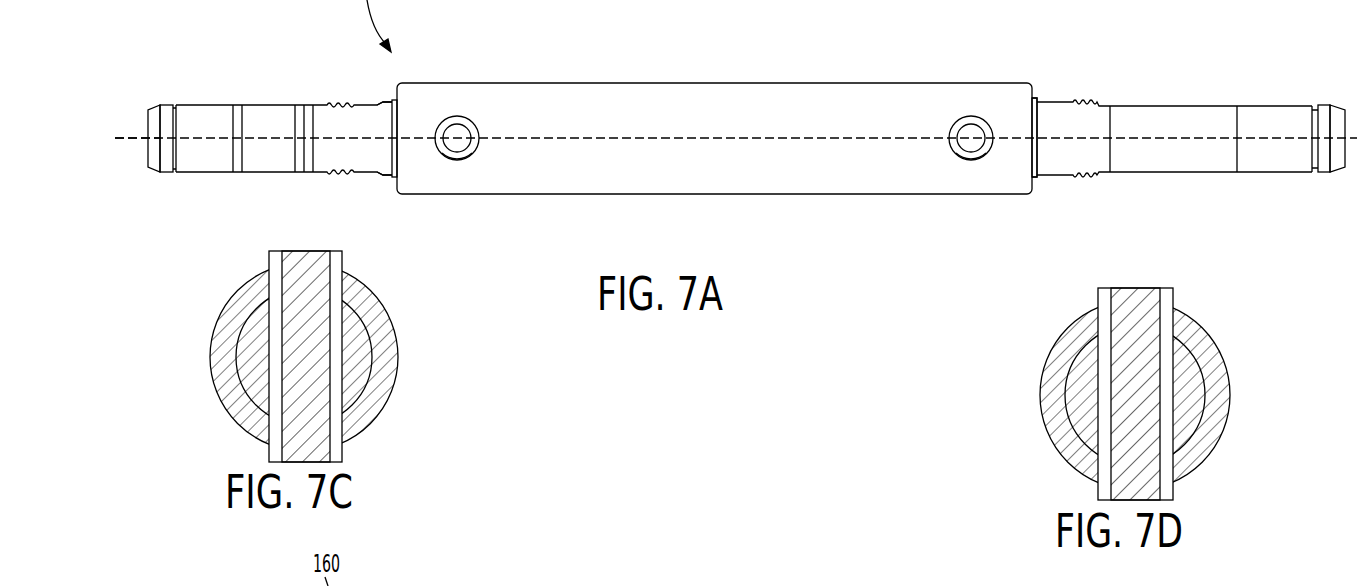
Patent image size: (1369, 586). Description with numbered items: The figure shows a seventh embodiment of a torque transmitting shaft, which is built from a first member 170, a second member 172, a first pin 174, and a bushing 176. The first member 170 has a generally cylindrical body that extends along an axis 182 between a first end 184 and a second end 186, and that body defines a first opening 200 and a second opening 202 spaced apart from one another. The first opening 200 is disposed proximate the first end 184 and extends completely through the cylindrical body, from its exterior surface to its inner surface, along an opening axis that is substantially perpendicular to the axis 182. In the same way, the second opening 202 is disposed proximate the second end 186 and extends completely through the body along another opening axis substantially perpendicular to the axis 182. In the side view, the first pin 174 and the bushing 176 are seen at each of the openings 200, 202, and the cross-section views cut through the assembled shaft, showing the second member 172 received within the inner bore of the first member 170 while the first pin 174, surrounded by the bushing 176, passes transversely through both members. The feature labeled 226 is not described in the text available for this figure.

In FIG. 7A, the first member 170 is at (662, 58).
In FIG. 7C, the first member 170 is at (366, 298).
In FIG. 7D, the first member 170 is at (1196, 335).
In FIG. 7A, the second member 172 is at (343, 66).
In FIG. 7C, the second member 172 is at (360, 356).
In FIG. 7D, the second member 172 is at (1190, 393).
In FIG. 7A, the first pin 174 is at (458, 131).
In FIG. 7C, the first pin 174 is at (302, 270).
In FIG. 7D, the first pin 174 is at (1133, 307).
In FIG. 7A, the bushing 176 is at (446, 124).
In FIG. 7C, the bushing 176 is at (336, 262).
In FIG. 7D, the bushing 176 is at (1167, 300).
In FIG. 7A, the axis 182 is at (121, 141).
In FIG. 7A, the first end 184 is at (396, 96).
In FIG. 7A, the second end 186 is at (1037, 96).
In FIG. 7A, the first opening 200 is at (463, 159).
In FIG. 7A, the second opening 202 is at (975, 159).
In FIG. 7A, the pin bore 226 is at (971, 132).